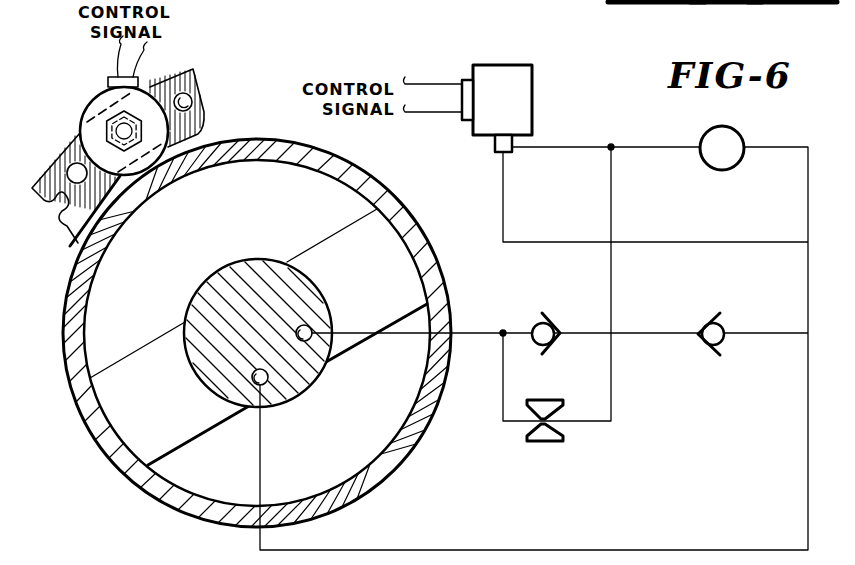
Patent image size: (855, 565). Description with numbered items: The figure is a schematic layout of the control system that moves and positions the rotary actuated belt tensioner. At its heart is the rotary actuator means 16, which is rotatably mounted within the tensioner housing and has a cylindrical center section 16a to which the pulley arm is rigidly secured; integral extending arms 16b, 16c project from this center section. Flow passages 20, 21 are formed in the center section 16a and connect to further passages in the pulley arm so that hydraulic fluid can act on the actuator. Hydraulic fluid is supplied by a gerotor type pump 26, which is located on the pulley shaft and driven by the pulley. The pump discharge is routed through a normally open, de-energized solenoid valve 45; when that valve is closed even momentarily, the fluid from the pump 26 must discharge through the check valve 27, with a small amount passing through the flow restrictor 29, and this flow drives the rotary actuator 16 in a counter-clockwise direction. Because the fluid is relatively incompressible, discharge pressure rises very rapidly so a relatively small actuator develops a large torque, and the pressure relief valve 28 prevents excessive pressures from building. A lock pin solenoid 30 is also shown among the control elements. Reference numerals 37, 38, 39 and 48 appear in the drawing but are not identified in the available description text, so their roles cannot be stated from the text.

The actuator means 16 is at (249, 317).
The center section 16a is at (258, 283).
The integral extending arm 16b is at (333, 258).
The integral extending arm 16c is at (198, 418).
The flow passage 20 is at (310, 340).
The flow passage 21 is at (264, 384).
The gerotor type pump 26 is at (742, 132).
The check valve 27 is at (540, 316).
The pressure relief valve 28 is at (709, 316).
The flow restrictor 29 is at (545, 443).
The lock pin solenoid 30 is at (200, 110).
The element of adjacent figure 37 is at (697, 4).
The element of adjacent figure 38 is at (756, 4).
The element of adjacent figure 39 is at (684, 4).
The solenoid valve 45 is at (533, 110).
The mounting bracket plate 48 is at (203, 84).